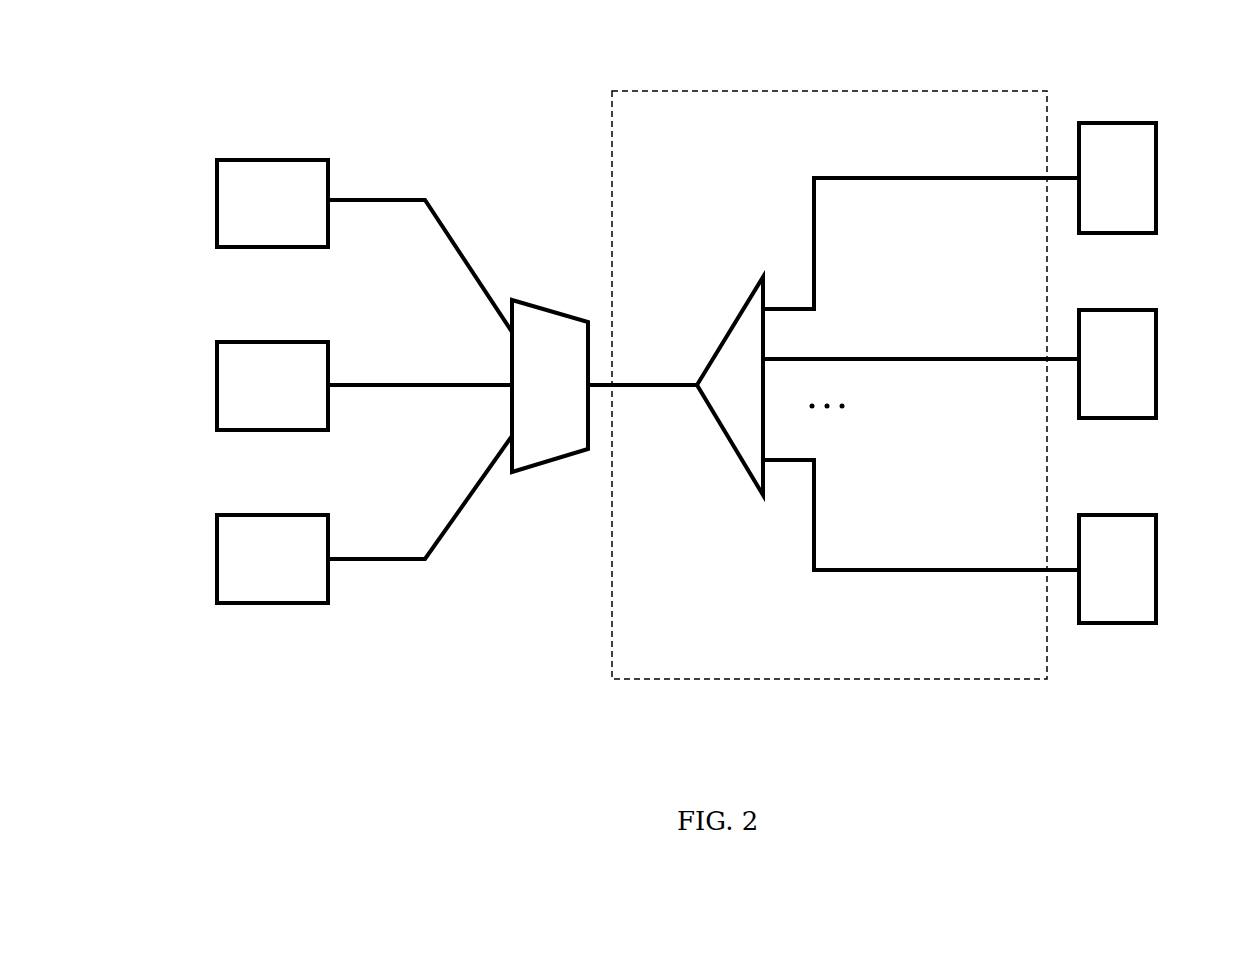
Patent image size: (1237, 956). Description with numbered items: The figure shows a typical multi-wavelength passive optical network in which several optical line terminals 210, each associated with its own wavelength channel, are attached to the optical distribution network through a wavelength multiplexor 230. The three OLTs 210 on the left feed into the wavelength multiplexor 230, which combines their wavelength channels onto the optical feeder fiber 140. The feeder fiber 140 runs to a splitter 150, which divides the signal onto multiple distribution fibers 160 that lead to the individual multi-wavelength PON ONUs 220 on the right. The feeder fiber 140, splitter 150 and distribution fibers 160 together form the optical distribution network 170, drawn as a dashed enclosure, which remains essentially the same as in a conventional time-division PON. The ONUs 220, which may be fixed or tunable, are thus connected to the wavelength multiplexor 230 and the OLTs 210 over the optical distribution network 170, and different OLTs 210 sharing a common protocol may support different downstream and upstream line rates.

The OLT 210 is at (260, 160).
The wavelength multiplexor 230 is at (556, 308).
The optical feeder fiber 140 is at (645, 388).
The splitter 150 is at (746, 305).
The distribution fibers 160 is at (900, 178).
The optical distribution network 170 is at (928, 680).
The ONU 220 is at (1112, 123).